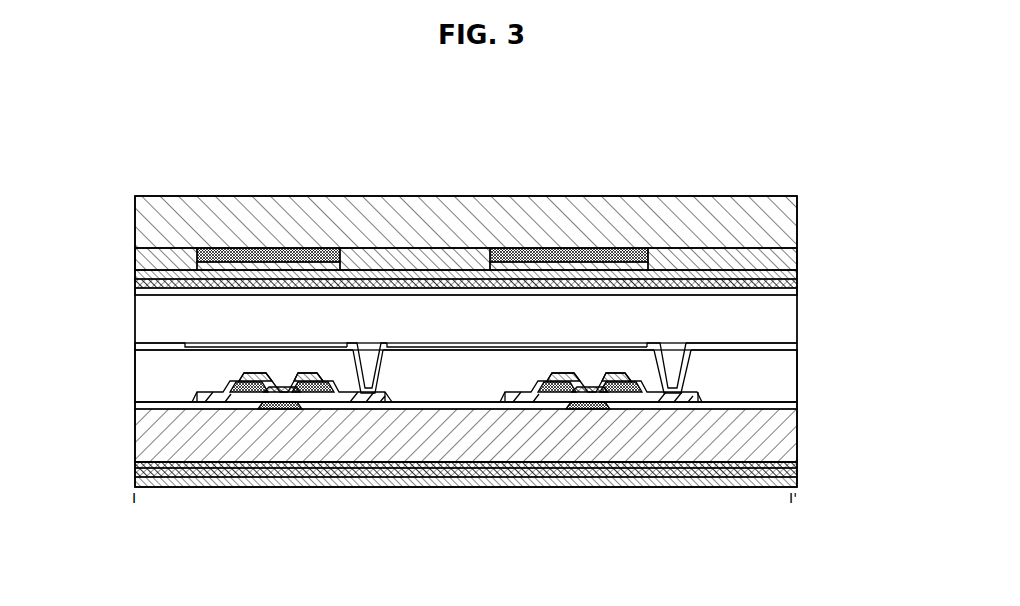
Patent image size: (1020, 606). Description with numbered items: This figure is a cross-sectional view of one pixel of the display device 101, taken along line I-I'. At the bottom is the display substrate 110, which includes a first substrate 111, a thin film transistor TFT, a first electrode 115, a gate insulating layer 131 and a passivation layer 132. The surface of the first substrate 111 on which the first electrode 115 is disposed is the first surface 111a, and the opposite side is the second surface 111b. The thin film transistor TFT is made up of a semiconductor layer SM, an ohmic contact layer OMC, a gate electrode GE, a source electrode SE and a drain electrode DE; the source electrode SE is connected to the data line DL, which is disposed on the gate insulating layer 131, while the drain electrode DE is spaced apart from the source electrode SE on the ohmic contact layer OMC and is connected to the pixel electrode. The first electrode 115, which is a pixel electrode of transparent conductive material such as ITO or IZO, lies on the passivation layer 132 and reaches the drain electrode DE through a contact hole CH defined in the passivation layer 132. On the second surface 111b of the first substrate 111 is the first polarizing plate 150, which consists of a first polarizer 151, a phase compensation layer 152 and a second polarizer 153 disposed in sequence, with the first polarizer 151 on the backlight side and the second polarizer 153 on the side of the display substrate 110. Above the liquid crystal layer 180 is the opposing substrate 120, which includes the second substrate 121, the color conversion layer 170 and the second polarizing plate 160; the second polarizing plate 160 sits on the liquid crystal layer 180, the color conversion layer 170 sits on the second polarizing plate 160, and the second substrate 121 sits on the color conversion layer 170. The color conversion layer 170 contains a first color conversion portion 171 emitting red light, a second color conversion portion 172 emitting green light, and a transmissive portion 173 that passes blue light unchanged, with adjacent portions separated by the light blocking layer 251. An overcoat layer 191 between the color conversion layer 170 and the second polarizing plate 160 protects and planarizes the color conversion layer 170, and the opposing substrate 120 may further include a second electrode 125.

The display device 101 is at (214, 148).
The opposing substrate 120 is at (803, 196).
The second substrate 121 is at (347, 201).
The color conversion layer 170 is at (127, 256).
The transmissive portion 173 is at (165, 260).
The first color conversion portion 171 is at (448, 257).
The second color conversion portion 172 is at (701, 260).
The light blocking layer 251 is at (278, 252).
The overcoat layer 191 is at (135, 278).
The second polarizing plate 160 is at (135, 283).
The second electrode 125 is at (738, 281).
The liquid crystal layer 180 is at (786, 321).
The display substrate 110 is at (803, 348).
The first electrode 115 is at (437, 346).
The contact hole CH is at (366, 362).
The passivation layer 132 is at (466, 376).
The gate insulating layer 131 is at (413, 406).
The first surface 111a is at (727, 405).
The first substrate 111 is at (143, 436).
The second surface 111b is at (723, 464).
The second polarizer 153 is at (797, 465).
The phase compensation layer 152 is at (797, 473).
The first polarizer 151 is at (797, 484).
The first polarizing plate 150 is at (855, 462).
The data line DL is at (206, 395).
The thin film transistor TFT is at (333, 527).
The gate electrode GE is at (273, 405).
The source electrode SE is at (245, 400).
The drain electrode DE is at (327, 398).
The semiconductor layer SM is at (302, 400).
The ohmic contact layer OMC is at (235, 400).